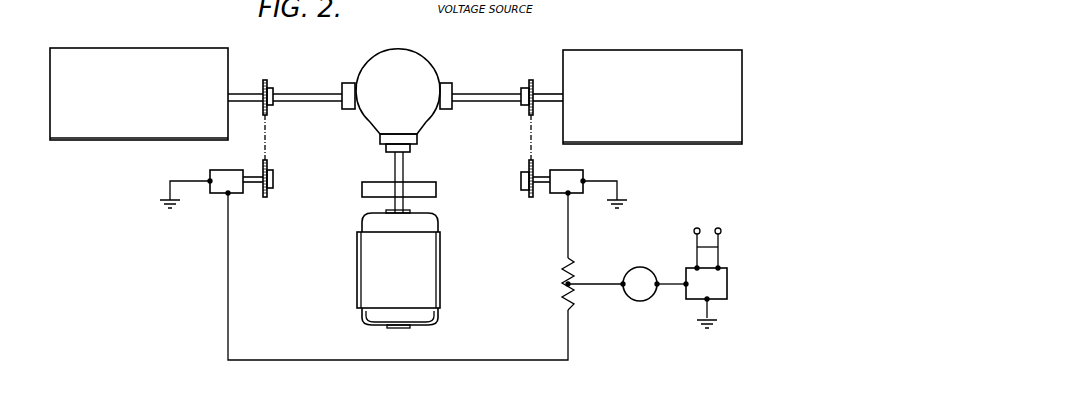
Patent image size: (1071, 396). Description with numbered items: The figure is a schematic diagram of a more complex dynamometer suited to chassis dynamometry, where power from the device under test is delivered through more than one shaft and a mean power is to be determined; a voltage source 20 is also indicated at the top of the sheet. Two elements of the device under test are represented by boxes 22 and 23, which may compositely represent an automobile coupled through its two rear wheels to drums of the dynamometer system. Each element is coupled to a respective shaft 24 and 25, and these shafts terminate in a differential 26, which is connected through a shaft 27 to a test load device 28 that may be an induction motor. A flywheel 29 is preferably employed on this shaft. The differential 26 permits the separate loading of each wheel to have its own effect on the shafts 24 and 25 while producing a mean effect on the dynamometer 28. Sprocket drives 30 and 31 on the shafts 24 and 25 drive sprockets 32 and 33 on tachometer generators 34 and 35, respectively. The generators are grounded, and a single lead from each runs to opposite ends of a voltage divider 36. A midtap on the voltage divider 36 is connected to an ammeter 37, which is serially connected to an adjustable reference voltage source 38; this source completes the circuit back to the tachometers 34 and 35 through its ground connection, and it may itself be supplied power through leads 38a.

The voltage source 20 is at (394, 4).
The box 22 is at (128, 101).
The box 23 is at (643, 99).
The shaft 24 is at (312, 93).
The shaft 25 is at (487, 93).
The differential 26 is at (386, 97).
The shaft 27 is at (404, 174).
The test load device 28 is at (388, 280).
The flywheel 29 is at (437, 192).
The sprocket drive 30 is at (267, 82).
The sprocket drive 31 is at (533, 82).
The sprocket 32 is at (270, 193).
The sprocket 33 is at (529, 166).
The tachometer generator 34 is at (235, 176).
The tachometer generator 35 is at (583, 174).
The voltage divider 36 is at (566, 281).
The ammeter 37 is at (645, 267).
The adjustable reference voltage source 38 is at (722, 286).
The leads 38a is at (718, 252).